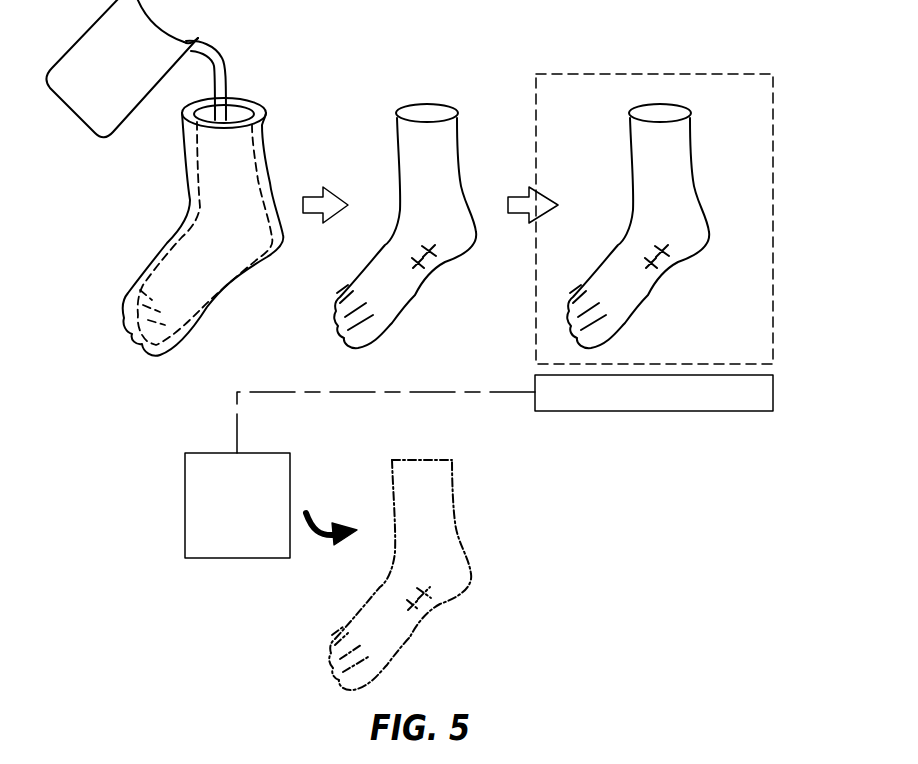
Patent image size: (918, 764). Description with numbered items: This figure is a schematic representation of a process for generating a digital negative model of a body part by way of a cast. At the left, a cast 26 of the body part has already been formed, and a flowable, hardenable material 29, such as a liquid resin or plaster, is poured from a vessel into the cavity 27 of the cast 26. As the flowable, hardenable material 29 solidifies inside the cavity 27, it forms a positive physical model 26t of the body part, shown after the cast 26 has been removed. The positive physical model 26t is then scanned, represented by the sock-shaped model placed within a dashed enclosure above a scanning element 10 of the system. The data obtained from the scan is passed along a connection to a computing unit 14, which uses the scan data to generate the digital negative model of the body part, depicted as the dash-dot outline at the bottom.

The dyeing/treatment system 10 is at (665, 375).
The controller 14 is at (250, 522).
The cast 26 is at (197, 207).
The positive physical model 26t is at (413, 167).
The cavity 27 is at (175, 272).
The flowable, hardenable material 29 is at (222, 67).